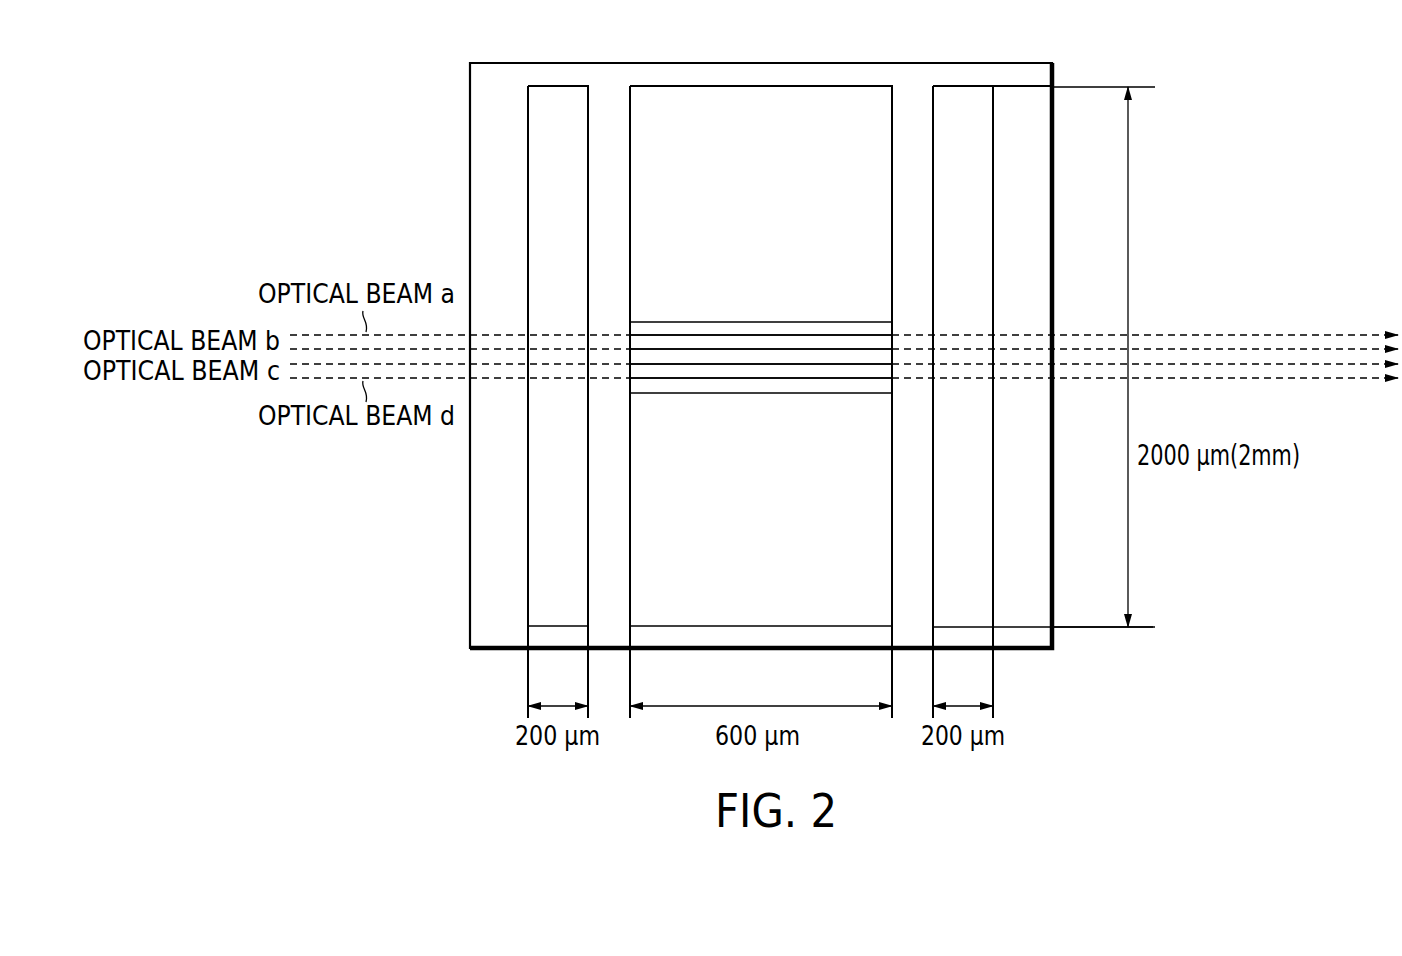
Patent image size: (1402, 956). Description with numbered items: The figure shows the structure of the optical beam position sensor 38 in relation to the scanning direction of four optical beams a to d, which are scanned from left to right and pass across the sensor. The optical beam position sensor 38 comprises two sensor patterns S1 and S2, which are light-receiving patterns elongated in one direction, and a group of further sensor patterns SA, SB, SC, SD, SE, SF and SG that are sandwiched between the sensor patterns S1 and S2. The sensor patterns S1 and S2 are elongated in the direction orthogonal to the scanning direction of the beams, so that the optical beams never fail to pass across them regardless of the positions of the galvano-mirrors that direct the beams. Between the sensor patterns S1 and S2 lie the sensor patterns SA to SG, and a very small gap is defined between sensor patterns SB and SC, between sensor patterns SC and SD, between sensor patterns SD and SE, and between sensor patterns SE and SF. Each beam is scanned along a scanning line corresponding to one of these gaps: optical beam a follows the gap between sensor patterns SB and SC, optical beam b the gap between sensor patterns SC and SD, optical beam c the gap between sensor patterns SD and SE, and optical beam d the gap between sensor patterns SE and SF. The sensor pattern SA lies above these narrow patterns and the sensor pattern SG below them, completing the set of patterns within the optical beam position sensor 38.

The optical beam position sensor 38 is at (880, 63).
The sensor pattern S1 is at (563, 102).
The sensor pattern SA is at (760, 102).
The sensor pattern S2 is at (955, 102).
The sensor pattern SB is at (672, 330).
The sensor pattern SC is at (737, 343).
The sensor pattern SD is at (802, 358).
The sensor pattern SE is at (688, 370).
The sensor pattern SF is at (790, 385).
The sensor pattern SG is at (760, 613).